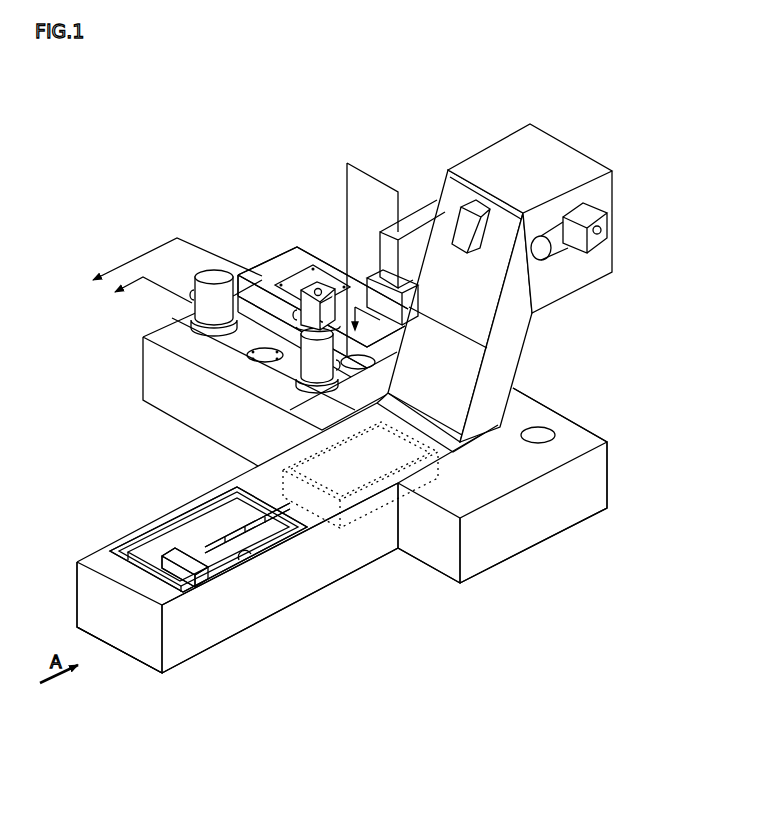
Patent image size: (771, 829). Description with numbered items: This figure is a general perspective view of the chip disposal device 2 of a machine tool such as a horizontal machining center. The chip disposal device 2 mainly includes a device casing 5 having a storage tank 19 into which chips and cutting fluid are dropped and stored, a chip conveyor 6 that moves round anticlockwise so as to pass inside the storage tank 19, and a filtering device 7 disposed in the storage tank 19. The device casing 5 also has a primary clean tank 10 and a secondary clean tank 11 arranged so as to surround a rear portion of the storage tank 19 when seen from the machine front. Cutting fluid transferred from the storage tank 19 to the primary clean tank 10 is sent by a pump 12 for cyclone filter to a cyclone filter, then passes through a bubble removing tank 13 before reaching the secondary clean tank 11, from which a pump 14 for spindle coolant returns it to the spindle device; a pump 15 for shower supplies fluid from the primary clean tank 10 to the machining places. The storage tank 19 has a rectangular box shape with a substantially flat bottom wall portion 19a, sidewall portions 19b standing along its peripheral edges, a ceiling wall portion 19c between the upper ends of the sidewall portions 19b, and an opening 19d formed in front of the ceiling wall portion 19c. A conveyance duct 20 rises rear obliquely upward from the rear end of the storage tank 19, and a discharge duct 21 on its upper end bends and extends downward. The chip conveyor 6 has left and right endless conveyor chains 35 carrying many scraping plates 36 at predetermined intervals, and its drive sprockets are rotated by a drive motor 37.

The chip disposal device 2 is at (245, 210).
The device casing 5 is at (392, 568).
The chip conveyor 6 is at (155, 552).
The filtering device 7 is at (438, 485).
The primary clean tank 10 is at (552, 400).
The secondary clean tank 11 is at (305, 245).
The pump for cyclone filter 12 is at (300, 380).
The bubble removing tank 13 is at (419, 203).
The pump for spindle coolant 14 is at (323, 285).
The cylinder 15 is at (208, 318).
The storage tank 19 is at (148, 500).
The bottom wall portion 19a is at (212, 633).
The sidewall portions 19b is at (140, 645).
The ceiling wall portion 19c is at (327, 540).
The opening 19d is at (242, 555).
The conveyance duct 20 is at (530, 352).
The discharge duct 21 is at (617, 200).
The conveyor chains 35 is at (225, 532).
The scraping plates 36 is at (190, 563).
The drive motor 37 is at (560, 257).